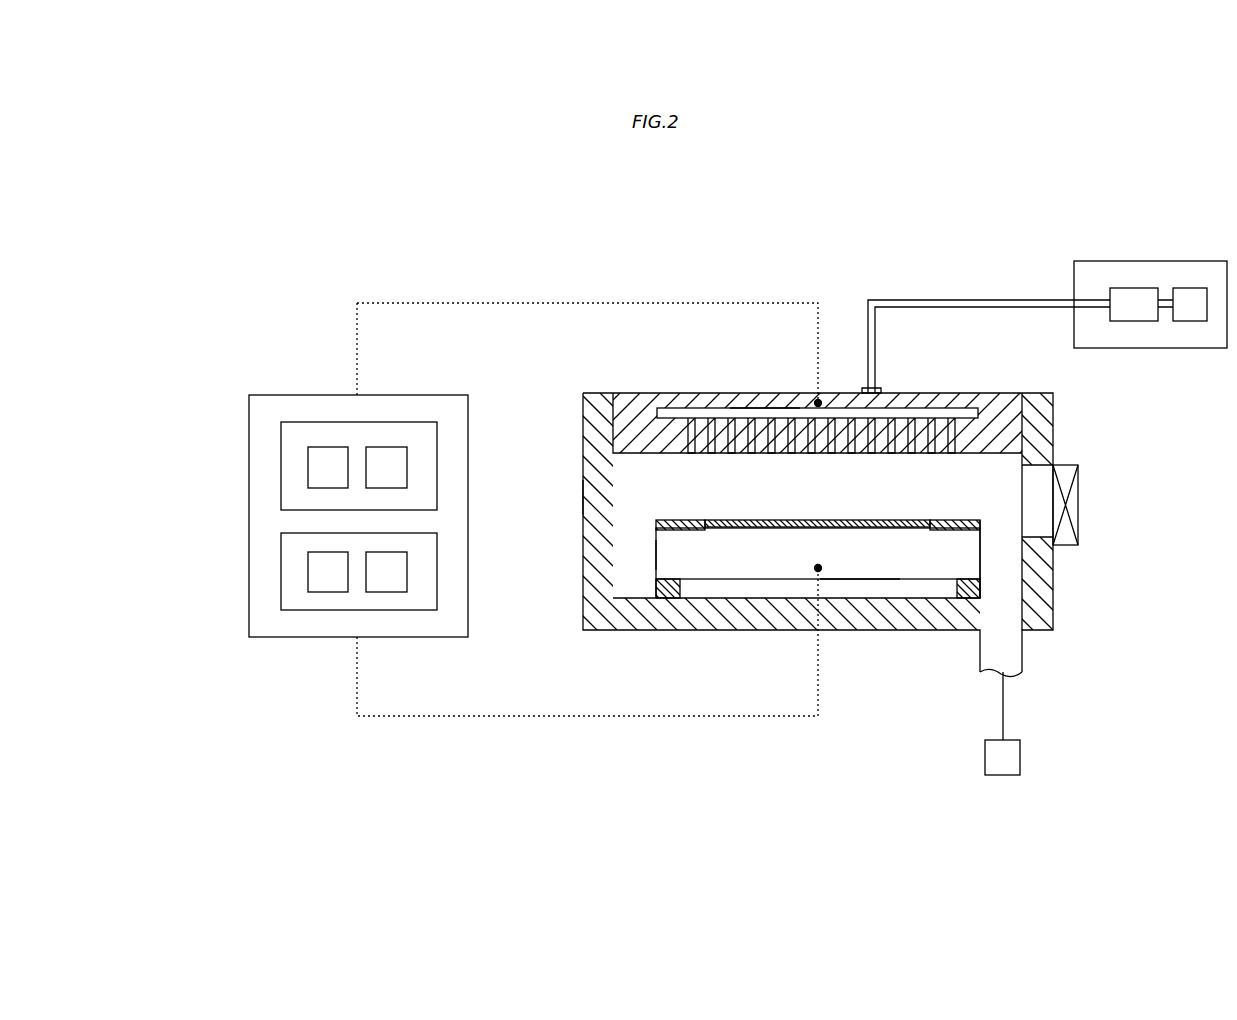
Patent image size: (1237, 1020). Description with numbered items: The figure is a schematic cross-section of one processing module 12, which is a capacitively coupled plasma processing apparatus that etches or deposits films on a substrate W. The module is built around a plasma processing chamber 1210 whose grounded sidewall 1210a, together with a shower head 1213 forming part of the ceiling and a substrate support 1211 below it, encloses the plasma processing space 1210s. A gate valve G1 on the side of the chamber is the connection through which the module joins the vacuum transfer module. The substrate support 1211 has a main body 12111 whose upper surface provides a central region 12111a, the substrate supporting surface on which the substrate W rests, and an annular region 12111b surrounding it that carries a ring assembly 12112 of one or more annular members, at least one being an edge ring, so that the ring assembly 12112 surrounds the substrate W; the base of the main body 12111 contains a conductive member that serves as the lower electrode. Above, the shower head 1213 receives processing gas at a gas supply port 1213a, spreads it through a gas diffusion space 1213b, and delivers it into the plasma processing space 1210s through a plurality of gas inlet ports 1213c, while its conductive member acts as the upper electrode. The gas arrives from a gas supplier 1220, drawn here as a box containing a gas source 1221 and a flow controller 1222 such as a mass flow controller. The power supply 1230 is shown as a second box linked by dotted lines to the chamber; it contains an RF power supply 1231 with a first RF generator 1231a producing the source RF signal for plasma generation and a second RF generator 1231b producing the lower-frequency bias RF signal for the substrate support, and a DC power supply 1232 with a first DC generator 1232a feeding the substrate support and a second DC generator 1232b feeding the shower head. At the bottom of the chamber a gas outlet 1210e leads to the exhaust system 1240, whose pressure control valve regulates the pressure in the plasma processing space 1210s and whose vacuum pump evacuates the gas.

The processing module 12 is at (504, 231).
The plasma processing chamber 1210 is at (611, 371).
The plasma processing space 1210s is at (636, 479).
The sidewall 1210a is at (583, 497).
The gas outlet 1210e is at (1023, 648).
The substrate support 1211 is at (696, 507).
The main body 12111 is at (656, 553).
The central region 12111a is at (847, 528).
The annular region 12111b is at (683, 532).
The ring assembly 12112 is at (960, 520).
The substrate W is at (882, 520).
The shower head 1213 is at (670, 388).
The gas supply port 1213a is at (866, 390).
The gas diffusion space 1213b is at (755, 408).
The gas inlet ports 1213c is at (826, 455).
The gas supplier 1220 is at (1183, 257).
The gas source 1221 is at (1190, 316).
The flow controller 1222 is at (1135, 316).
The power supply 1230 is at (471, 651).
The RF power supply 1231 is at (292, 452).
The first RF generator 1231a is at (322, 462).
The second RF generator 1231b is at (385, 462).
The DC power supply 1232 is at (292, 543).
The first DC generator 1232a is at (324, 580).
The second DC generator 1232b is at (385, 580).
The exhaust system 1240 is at (1020, 755).
The gate valve G1 is at (1078, 500).